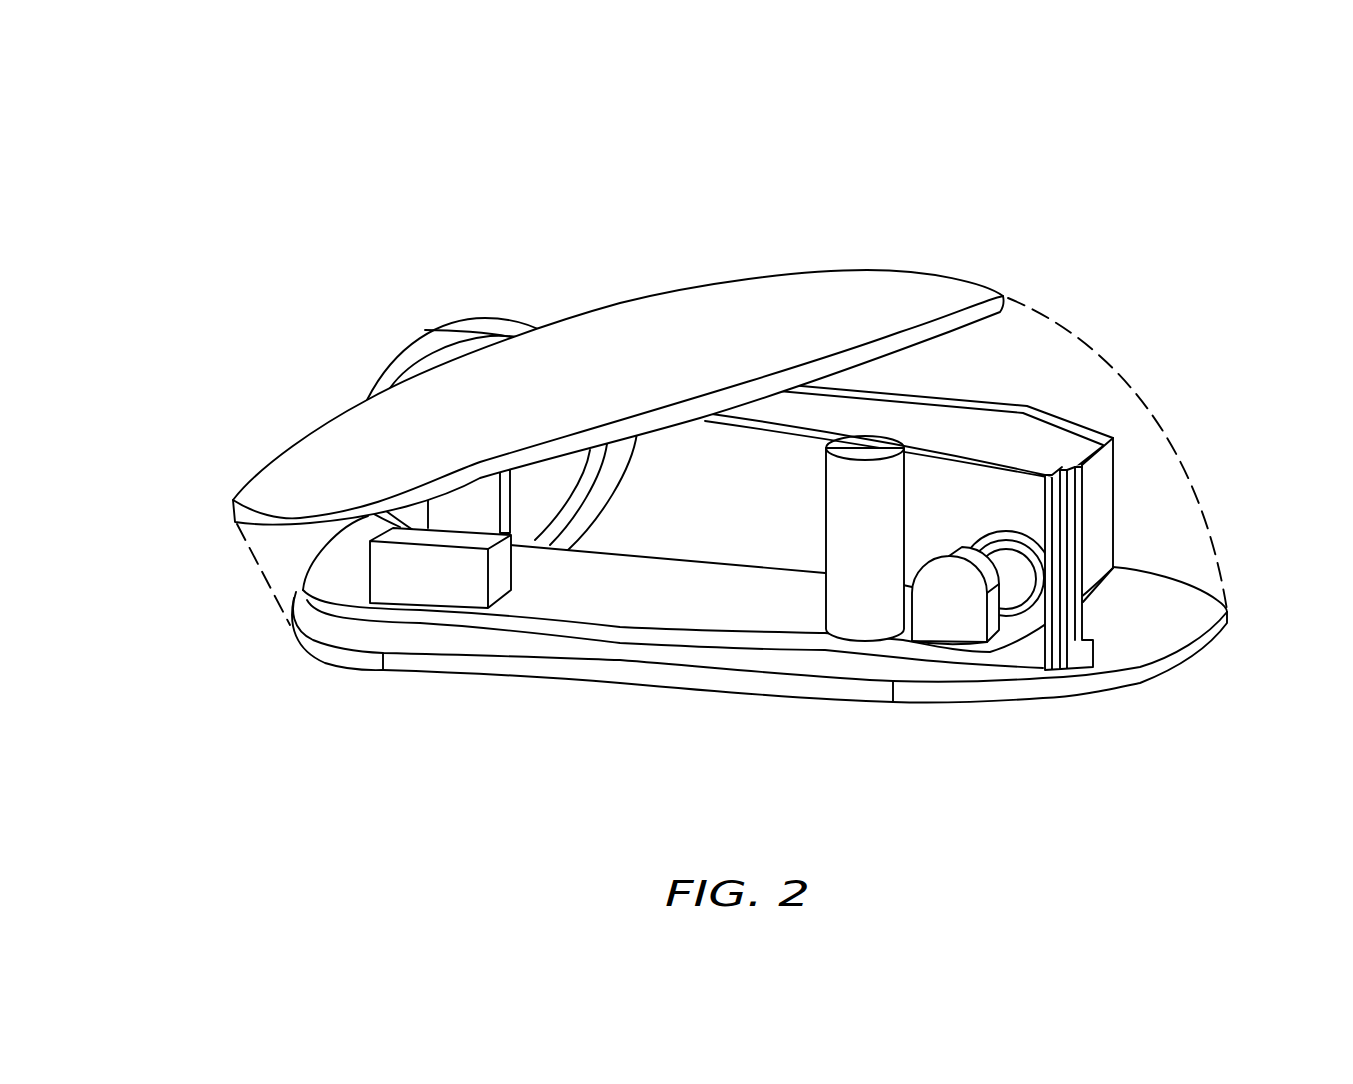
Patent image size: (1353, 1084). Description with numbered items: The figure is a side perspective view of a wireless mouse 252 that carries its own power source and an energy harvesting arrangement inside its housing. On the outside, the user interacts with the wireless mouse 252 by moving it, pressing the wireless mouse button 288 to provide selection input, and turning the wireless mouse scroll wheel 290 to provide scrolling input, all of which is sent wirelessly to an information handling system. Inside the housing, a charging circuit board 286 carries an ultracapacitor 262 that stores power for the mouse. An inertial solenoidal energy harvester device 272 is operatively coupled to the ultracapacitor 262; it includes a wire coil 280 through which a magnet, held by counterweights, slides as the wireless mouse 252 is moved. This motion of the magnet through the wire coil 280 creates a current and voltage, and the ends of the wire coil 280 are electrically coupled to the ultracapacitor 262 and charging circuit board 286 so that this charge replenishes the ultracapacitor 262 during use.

The wireless mouse 252 is at (702, 432).
The wireless mouse button 288 is at (258, 478).
The wireless mouse scroll wheel 290 is at (408, 343).
The wire coil 280 is at (1000, 562).
The ultracapacitor 262 is at (852, 615).
The charging circuit board 286 is at (937, 655).
The inertial solenoidal energy harvester device 272 is at (977, 655).